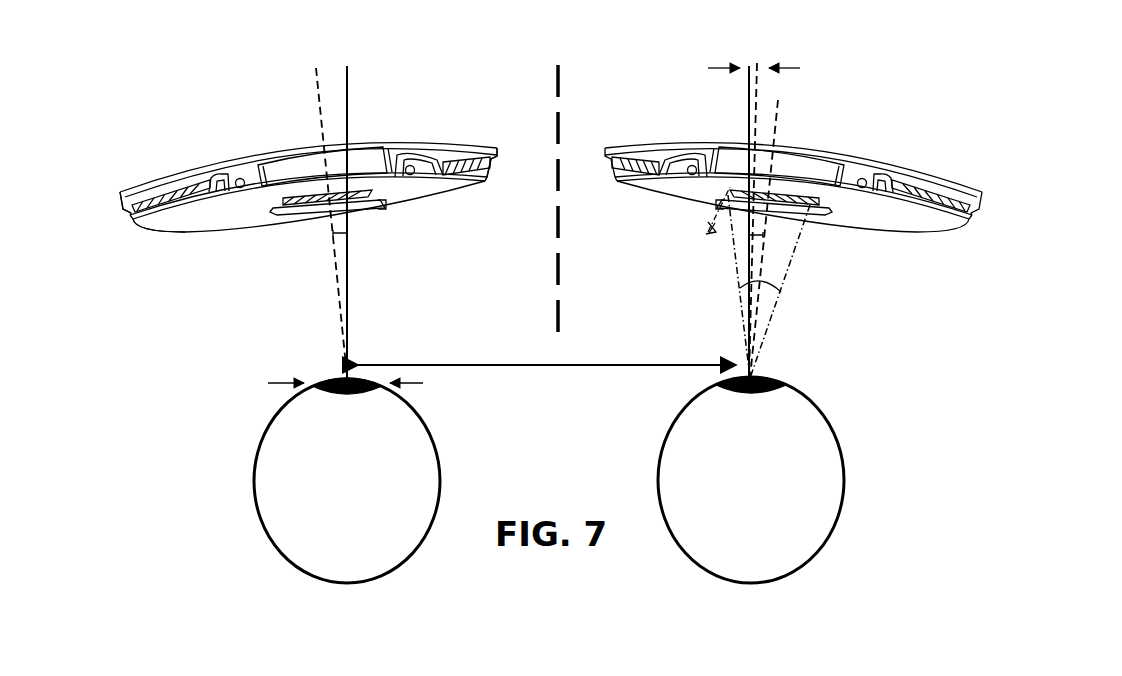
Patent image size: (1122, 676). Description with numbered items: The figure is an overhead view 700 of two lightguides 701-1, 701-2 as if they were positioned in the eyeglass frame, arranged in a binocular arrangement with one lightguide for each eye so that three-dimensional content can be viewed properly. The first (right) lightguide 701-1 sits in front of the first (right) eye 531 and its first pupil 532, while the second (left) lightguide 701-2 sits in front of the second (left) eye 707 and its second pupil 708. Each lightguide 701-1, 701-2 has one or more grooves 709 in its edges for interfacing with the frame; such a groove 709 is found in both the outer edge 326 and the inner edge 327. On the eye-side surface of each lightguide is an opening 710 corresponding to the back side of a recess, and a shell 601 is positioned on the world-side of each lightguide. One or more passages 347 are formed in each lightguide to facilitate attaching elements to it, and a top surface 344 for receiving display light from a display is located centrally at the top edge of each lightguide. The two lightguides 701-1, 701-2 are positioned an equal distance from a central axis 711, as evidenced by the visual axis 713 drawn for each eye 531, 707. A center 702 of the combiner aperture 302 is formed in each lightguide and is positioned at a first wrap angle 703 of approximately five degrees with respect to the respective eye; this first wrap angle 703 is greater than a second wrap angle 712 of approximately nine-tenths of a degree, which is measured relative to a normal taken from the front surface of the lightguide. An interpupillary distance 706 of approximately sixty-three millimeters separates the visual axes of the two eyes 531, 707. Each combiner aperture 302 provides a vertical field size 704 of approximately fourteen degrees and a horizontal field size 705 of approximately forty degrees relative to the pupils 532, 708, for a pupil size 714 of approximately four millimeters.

The overhead view 700 is at (505, 106).
The first lightguide 701-1 is at (210, 222).
The second lightguide 701-2 is at (900, 222).
The shell 601 is at (203, 168).
The passage 347 is at (239, 178).
The top surface 344 is at (293, 160).
The groove 709 is at (127, 210).
The outer edge 326 is at (128, 228).
The center of combiner aperture 702 is at (332, 200).
The combiner aperture 302 is at (363, 197).
The opening 710 is at (387, 207).
The inner edge 327 is at (487, 183).
The first wrap angle 703 is at (343, 237).
The visual axis 713 is at (349, 322).
The central axis 711 is at (558, 335).
The pupil size 714 is at (330, 383).
The second pupil 708 is at (325, 395).
The second eye 707 is at (364, 500).
The second wrap angle 712 is at (738, 219).
The vertical field size 704 is at (707, 228).
The horizontal field size 705 is at (782, 297).
The interpupillary distance 706 is at (672, 363).
The first pupil 532 is at (772, 390).
The first eye 531 is at (765, 500).